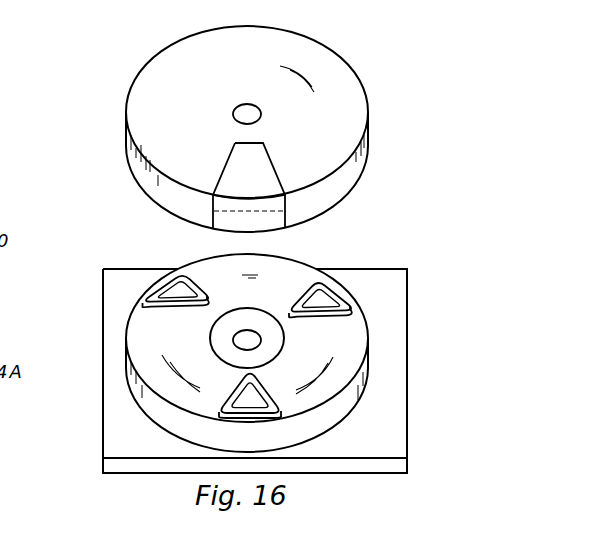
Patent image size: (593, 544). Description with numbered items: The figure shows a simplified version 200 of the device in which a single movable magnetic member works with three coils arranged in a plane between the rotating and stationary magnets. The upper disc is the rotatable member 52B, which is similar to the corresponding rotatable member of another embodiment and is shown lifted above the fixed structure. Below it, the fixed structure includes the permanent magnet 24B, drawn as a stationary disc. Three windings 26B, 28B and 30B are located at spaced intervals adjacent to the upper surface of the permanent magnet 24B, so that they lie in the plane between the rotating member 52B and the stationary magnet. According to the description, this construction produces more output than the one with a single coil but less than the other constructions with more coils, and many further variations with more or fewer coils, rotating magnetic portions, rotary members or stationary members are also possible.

The rotatable member 52B is at (128, 125).
The simplified version of the device 200 is at (354, 235).
The permanent magnet 24B is at (351, 412).
The winding 26B is at (214, 398).
The winding 28B is at (167, 317).
The winding 30B is at (337, 329).